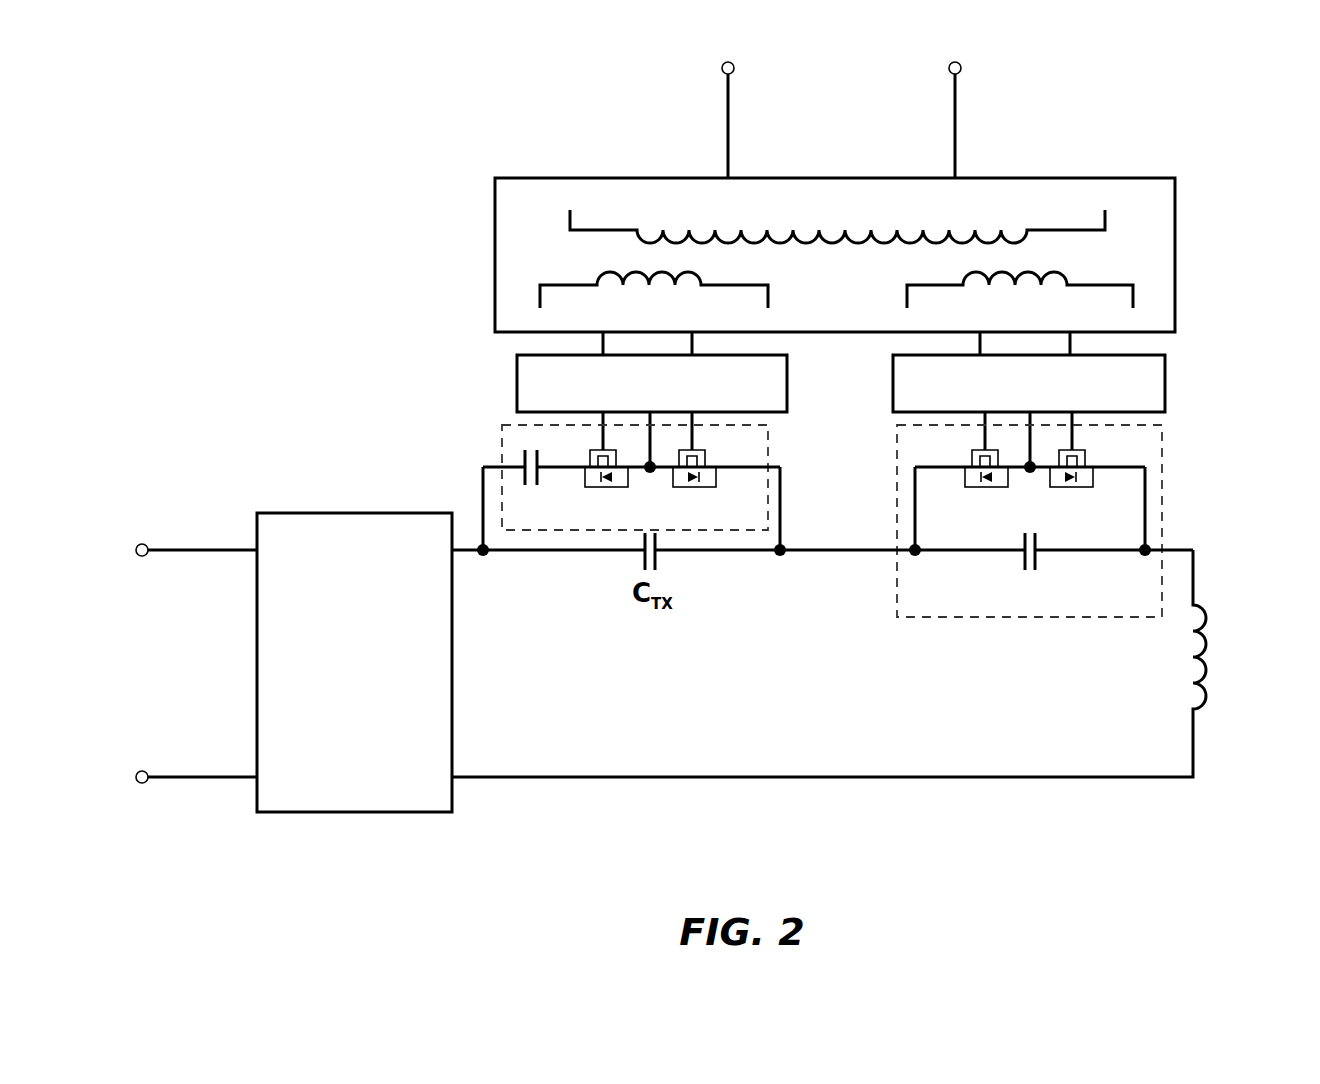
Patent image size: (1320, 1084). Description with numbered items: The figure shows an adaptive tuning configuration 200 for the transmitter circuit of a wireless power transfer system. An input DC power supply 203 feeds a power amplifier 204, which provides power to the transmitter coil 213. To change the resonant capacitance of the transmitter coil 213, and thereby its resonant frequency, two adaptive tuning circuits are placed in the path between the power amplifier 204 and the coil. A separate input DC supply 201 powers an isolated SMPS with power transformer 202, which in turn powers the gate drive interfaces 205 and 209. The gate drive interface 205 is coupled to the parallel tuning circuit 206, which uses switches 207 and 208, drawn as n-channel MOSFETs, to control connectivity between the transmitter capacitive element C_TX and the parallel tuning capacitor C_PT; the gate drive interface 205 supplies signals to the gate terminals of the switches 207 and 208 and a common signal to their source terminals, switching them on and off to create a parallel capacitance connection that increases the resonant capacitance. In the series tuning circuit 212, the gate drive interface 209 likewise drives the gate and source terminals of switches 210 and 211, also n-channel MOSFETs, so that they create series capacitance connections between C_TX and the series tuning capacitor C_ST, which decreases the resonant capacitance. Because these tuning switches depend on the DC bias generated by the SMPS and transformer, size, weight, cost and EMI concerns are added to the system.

The adaptive tuning configuration 200 is at (263, 423).
The input DC supply 201 is at (841, 120).
The isolated SMPS with power transformer 202 is at (719, 255).
The input DC power supply 203 is at (173, 663).
The power amplifier 204 is at (354, 662).
The gate drive interface 205 is at (515, 402).
The parallel tuning circuit 206 is at (483, 520).
The switch 207 is at (592, 490).
The switch 208 is at (709, 490).
The gate drive interface 209 is at (1165, 365).
The switch 210 is at (958, 496).
The switch 211 is at (1092, 499).
The series tuning circuit 212 is at (1122, 618).
The transmitter coil 213 is at (881, 663).